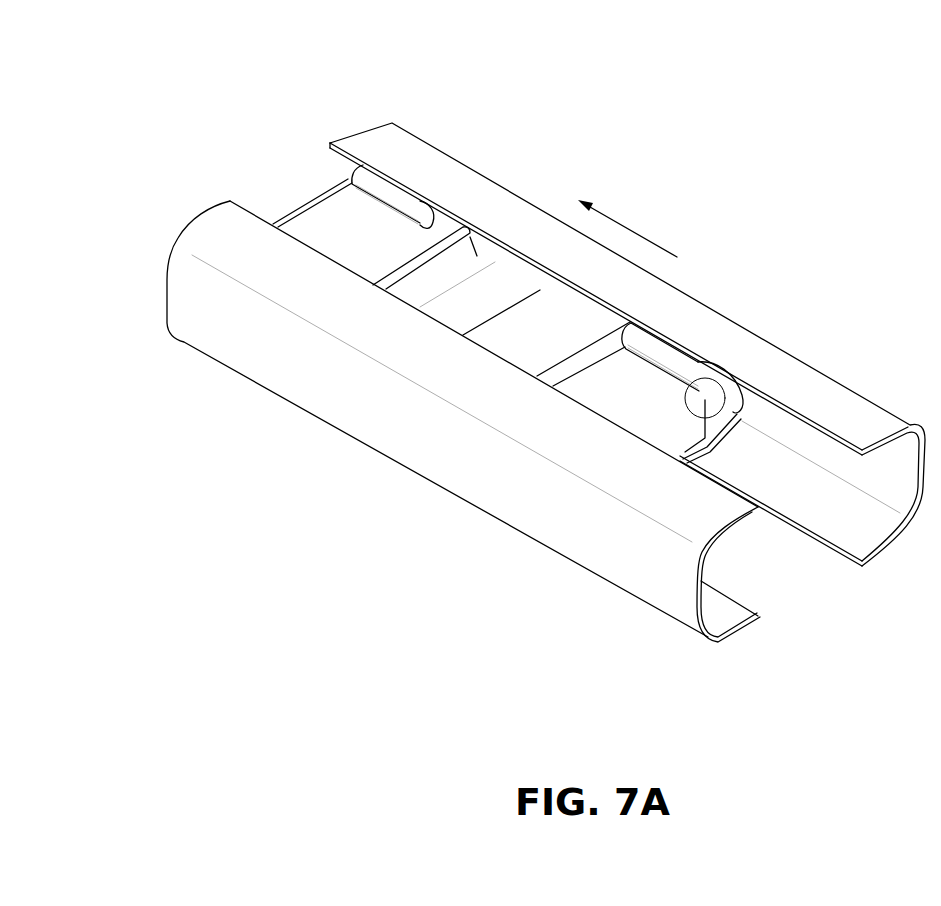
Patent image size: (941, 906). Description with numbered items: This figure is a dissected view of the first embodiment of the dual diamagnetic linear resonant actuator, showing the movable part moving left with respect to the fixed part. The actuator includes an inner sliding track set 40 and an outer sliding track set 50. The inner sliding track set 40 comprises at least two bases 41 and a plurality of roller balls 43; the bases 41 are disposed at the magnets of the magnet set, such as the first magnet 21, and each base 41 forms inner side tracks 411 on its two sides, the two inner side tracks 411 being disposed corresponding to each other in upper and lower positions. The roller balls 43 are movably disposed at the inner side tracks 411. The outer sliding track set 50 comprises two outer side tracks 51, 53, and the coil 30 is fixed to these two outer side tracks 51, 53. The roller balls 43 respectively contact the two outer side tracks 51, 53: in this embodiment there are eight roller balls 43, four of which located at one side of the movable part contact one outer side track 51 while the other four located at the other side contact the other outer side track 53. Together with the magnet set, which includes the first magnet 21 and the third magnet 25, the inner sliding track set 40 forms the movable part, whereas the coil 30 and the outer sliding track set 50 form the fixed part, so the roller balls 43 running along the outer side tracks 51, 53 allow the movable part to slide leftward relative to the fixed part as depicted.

The outer sliding track set 50 is at (323, 32).
The outer side track 51 is at (218, 228).
The outer side track 53 is at (383, 143).
The first magnet 21 is at (427, 285).
The third magnet 25 is at (467, 317).
The coil 30 is at (530, 337).
The inner sliding track set 40 is at (923, 291).
The base 41 is at (400, 247).
The inner side track 411 is at (387, 195).
The roller ball 43 is at (713, 390).